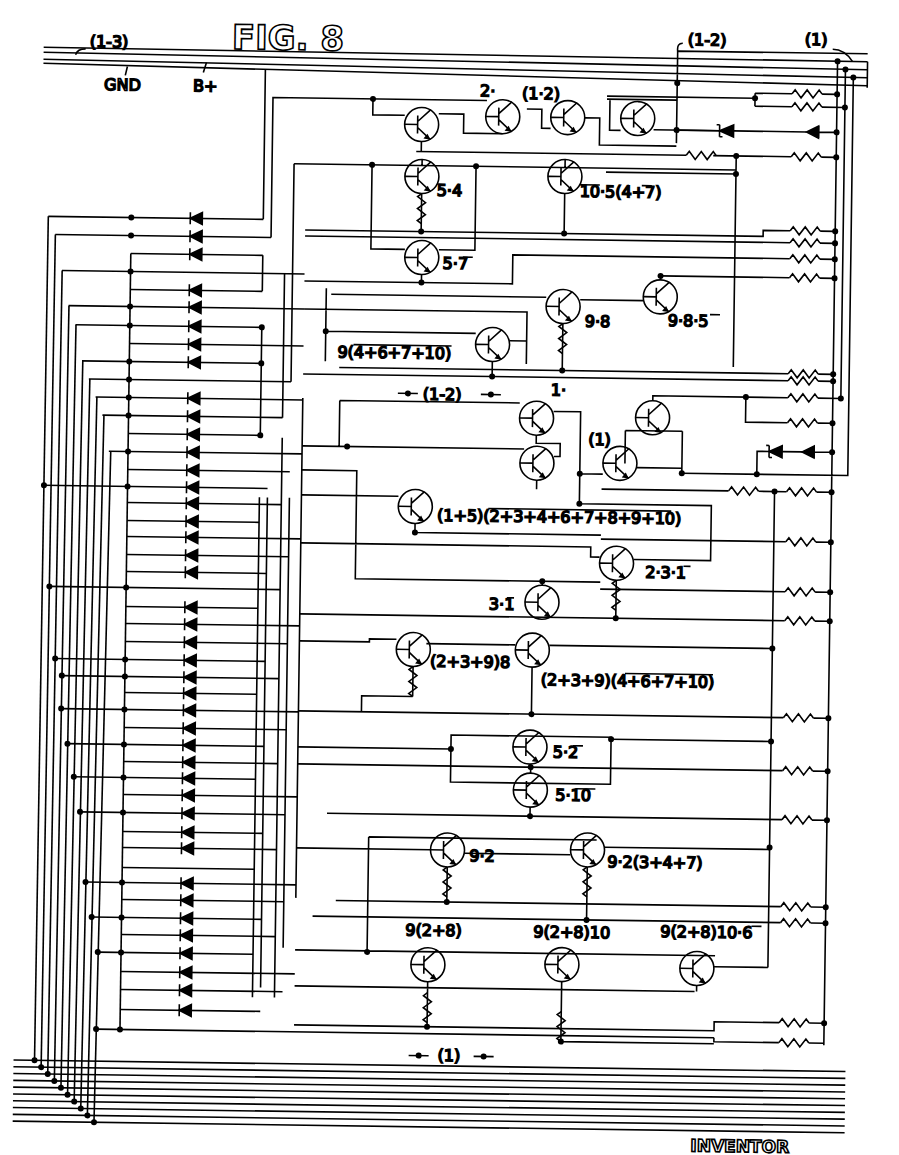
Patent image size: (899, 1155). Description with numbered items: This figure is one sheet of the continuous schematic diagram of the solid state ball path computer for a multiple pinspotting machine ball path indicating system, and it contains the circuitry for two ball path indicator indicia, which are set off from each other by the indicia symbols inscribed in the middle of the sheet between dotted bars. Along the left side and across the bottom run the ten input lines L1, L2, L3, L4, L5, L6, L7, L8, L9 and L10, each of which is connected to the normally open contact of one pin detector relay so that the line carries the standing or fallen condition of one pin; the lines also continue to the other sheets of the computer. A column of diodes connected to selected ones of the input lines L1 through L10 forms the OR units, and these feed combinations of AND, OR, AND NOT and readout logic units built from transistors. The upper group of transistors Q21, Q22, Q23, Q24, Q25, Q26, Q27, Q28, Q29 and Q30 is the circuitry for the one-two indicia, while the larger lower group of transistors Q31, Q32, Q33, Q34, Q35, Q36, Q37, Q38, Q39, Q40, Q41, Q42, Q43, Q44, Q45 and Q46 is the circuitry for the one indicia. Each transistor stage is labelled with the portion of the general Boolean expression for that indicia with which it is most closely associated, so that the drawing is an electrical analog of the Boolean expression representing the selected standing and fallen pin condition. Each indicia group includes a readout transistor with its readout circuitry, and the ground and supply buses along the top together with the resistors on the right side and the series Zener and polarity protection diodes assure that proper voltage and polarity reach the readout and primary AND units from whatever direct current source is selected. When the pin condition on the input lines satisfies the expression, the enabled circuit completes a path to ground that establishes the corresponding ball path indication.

The transistor Q21 is at (406, 126).
The transistor Q22 is at (513, 125).
The transistor Q23 is at (560, 99).
The transistor Q24 is at (629, 100).
The transistor Q25 is at (408, 179).
The transistor Q26 is at (547, 180).
The transistor Q27 is at (403, 257).
The transistor Q28 is at (476, 337).
The transistor Q29 is at (556, 300).
The transistor Q30 is at (641, 295).
The transistor Q31 is at (516, 417).
The transistor Q32 is at (638, 411).
The transistor Q33 is at (518, 462).
The transistor Q34 is at (637, 463).
The transistor Q35 is at (416, 495).
The transistor Q36 is at (596, 563).
The transistor Q37 is at (560, 602).
The transistor Q38 is at (394, 651).
The transistor Q39 is at (550, 650).
The transistor Q40 is at (511, 746).
The transistor Q41 is at (509, 789).
The transistor Q42 is at (428, 849).
The transistor Q43 is at (568, 849).
The transistor Q44 is at (447, 964).
The transistor Q45 is at (580, 964).
The transistor Q46 is at (714, 968).
The input line L1 is at (51, 260).
The input line L2 is at (58, 293).
The input line L3 is at (104, 664).
The input line L4 is at (90, 684).
The input line L5 is at (82, 750).
The input line L6 is at (86, 784).
The input line L7 is at (88, 820).
The input line L8 is at (88, 888).
The input line L9 is at (86, 924).
The input line L10 is at (103, 1052).